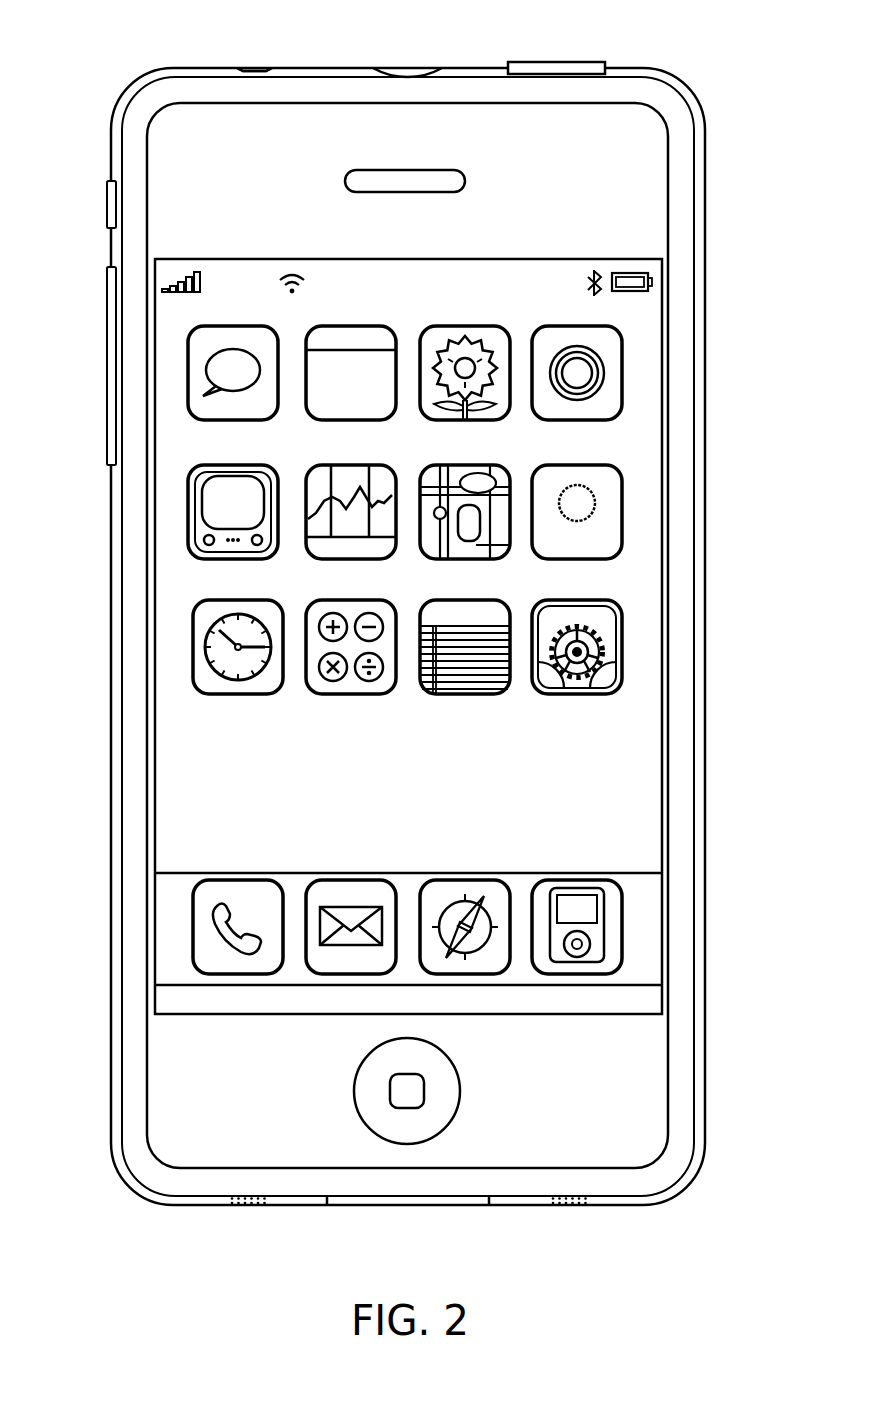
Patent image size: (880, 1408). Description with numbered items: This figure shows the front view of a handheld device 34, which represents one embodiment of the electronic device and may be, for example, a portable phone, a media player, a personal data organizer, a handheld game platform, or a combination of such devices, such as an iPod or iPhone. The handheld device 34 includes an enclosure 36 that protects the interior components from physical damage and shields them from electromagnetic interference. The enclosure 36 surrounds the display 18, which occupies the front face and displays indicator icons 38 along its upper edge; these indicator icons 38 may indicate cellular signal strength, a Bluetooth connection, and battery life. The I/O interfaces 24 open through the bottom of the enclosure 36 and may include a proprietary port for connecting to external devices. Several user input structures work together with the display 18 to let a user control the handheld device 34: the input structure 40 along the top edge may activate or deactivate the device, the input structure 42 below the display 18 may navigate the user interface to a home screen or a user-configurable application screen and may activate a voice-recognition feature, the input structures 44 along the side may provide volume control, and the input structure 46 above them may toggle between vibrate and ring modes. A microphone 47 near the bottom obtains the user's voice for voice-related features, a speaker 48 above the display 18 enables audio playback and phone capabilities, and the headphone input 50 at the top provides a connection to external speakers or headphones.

The handheld device 34 is at (143, 40).
The enclosure 36 is at (706, 256).
The display 18 is at (666, 768).
The headphone input 50 is at (254, 70).
The input structure 40 is at (556, 62).
The input structure 46 is at (107, 202).
The input structures 44 is at (110, 415).
The speaker 48 is at (405, 193).
The indicator icons 38 is at (192, 272).
The input structure 42 is at (448, 1054).
The I/O interfaces 24 is at (411, 1207).
The microphone 47 is at (246, 1207).